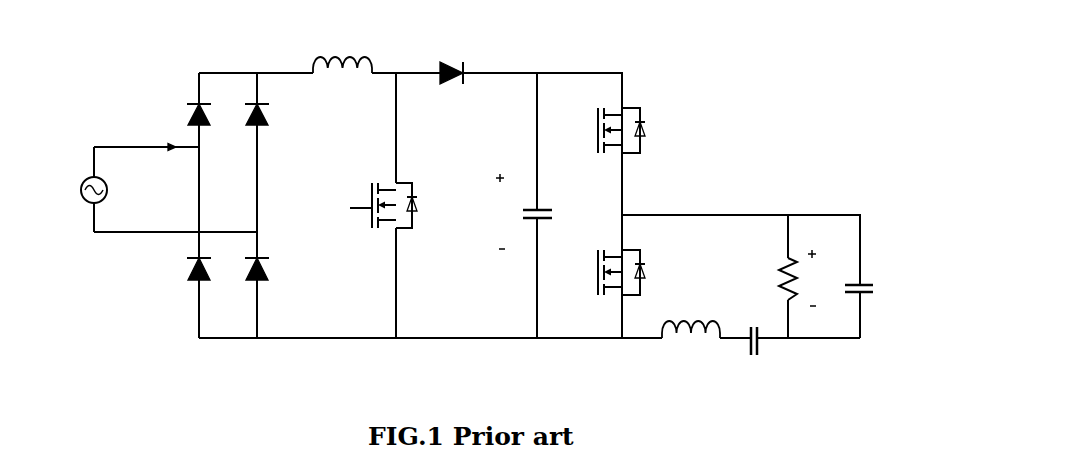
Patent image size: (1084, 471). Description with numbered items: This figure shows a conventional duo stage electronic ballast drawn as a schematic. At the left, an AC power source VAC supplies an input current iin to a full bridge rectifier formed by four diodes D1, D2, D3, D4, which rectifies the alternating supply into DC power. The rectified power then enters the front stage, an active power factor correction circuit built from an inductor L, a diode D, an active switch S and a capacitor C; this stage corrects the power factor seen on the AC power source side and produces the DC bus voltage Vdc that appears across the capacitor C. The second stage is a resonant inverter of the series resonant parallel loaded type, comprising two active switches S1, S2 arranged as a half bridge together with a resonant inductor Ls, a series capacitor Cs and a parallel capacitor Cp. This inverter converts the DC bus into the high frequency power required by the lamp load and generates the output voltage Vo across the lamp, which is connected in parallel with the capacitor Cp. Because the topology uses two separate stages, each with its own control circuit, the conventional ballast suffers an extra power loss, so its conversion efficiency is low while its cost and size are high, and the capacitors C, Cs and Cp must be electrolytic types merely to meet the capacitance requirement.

The AC power source VAC is at (104, 198).
The input current iin is at (159, 161).
The diode D1 is at (184, 114).
The diode D2 is at (184, 270).
The diode D3 is at (267, 119).
The diode D4 is at (267, 272).
The inductor L is at (342, 54).
The diode D is at (451, 61).
The active switch S is at (383, 216).
The DC bus voltage Vdc is at (500, 211).
The capacitor C is at (544, 217).
The active switch S1 is at (621, 142).
The active switch S2 is at (621, 283).
The inductor Ls is at (691, 320).
The capacitor Cs is at (753, 329).
The output voltage Vo is at (800, 278).
The capacitor Cp is at (869, 293).